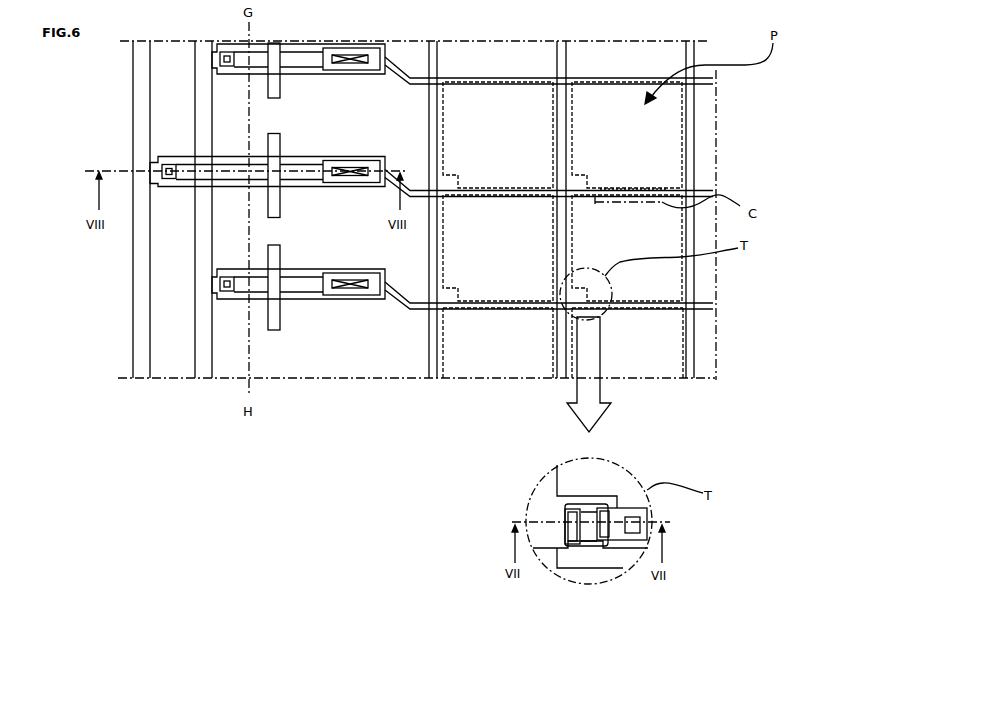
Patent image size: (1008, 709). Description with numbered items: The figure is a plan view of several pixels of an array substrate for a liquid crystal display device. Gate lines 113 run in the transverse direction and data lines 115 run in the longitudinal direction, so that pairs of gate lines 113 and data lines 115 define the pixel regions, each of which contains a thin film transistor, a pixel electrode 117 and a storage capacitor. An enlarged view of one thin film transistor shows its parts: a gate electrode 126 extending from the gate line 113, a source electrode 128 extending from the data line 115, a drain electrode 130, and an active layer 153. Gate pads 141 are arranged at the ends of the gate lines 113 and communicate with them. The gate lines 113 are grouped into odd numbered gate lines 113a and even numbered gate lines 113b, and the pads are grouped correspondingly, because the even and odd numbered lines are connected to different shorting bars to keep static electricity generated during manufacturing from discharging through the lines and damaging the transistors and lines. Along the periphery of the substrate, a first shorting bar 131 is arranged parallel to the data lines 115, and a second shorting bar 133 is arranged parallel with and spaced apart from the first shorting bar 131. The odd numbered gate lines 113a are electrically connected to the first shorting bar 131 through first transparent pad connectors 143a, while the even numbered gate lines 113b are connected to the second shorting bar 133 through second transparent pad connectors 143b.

The gate line 113 is at (650, 358).
The odd numbered gate line 113a is at (713, 310).
The even numbered gate line 113b is at (713, 191).
The data line 115 is at (695, 143).
The pixel electrode 117 is at (685, 112).
The gate electrode 126 is at (588, 503).
The source electrode 128 is at (573, 545).
The drain electrode 130 is at (630, 545).
The first shorting bar 131 is at (195, 278).
The second shorting bar 133 is at (133, 117).
The gate pad 141 is at (339, 346).
The first transparent pad connector 143a is at (357, 350).
The second transparent pad connector 143b is at (267, 141).
The active layer 153 is at (588, 544).